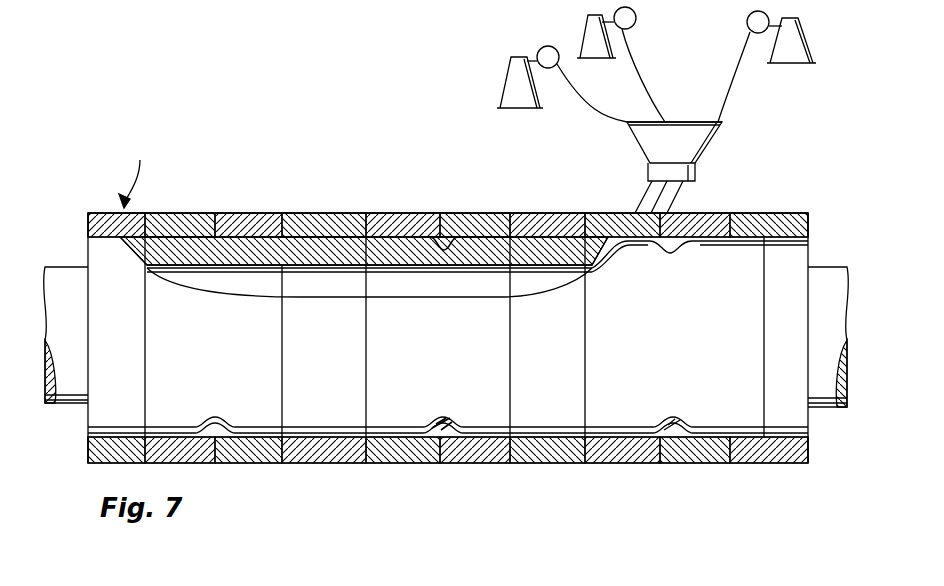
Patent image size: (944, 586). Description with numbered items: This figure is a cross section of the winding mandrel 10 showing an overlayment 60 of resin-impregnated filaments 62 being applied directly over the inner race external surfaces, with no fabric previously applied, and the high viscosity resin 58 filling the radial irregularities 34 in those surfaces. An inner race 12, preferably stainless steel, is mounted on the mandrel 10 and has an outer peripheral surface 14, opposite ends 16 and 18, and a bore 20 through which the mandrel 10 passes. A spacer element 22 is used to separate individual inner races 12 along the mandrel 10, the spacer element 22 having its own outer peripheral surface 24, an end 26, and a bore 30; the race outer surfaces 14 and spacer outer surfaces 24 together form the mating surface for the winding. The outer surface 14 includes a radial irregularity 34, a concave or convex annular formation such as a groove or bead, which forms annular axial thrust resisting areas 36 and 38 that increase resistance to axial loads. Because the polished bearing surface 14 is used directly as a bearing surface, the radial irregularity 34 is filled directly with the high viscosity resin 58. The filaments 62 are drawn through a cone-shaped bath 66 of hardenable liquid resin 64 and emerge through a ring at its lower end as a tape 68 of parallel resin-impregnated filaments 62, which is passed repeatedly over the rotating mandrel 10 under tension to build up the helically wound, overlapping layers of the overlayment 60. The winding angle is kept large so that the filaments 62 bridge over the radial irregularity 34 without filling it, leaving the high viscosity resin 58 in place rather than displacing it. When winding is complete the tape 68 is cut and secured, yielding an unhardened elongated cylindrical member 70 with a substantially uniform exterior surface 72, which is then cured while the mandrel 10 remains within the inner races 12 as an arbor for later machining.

The mandrel 10 is at (66, 282).
The inner race 12 is at (417, 438).
The outer peripheral surface 14 is at (425, 237).
The end 16 is at (365, 420).
The end 18 is at (380, 437).
The bore 20 is at (400, 270).
The spacer element 22 is at (328, 408).
The outer peripheral surface 24 is at (340, 237).
The end 26 is at (276, 436).
The bore 30 is at (305, 273).
The radial irregularity 34 is at (455, 246).
The annular axial thrust resisting area 36 is at (441, 430).
The annular axial thrust resisting area 38 is at (454, 430).
The high viscosity resin 58 is at (672, 258).
The overlayment 60 is at (805, 213).
The filament 62 is at (638, 60).
The hardenable liquid resin 64 is at (640, 134).
The bath 66 is at (722, 122).
The tape 68 is at (683, 192).
The unhardened elongated cylindrical member 70 is at (128, 174).
The exterior surface 72 is at (190, 213).